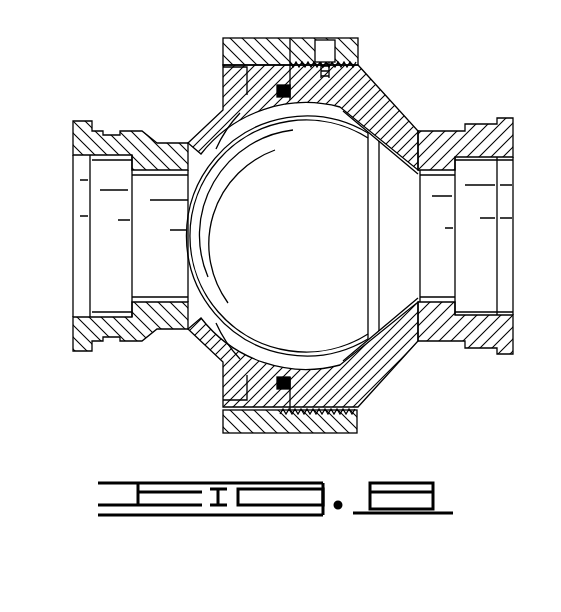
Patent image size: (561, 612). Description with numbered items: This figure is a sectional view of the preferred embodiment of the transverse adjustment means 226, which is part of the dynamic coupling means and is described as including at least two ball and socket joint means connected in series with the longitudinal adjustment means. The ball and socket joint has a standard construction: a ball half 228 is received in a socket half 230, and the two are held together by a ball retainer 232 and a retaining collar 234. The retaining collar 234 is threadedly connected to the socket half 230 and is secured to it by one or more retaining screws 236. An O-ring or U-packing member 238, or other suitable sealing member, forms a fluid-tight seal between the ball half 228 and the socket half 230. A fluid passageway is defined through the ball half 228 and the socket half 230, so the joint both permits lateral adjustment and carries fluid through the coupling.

The transverse adjustment means 226 is at (410, 89).
The ball half 228 is at (172, 153).
The socket half 230 is at (393, 352).
The ball retainer 232 is at (223, 378).
The retaining collar 234 is at (228, 423).
The retaining screw 236 is at (324, 56).
The O-ring or U-packing member 238 is at (288, 90).